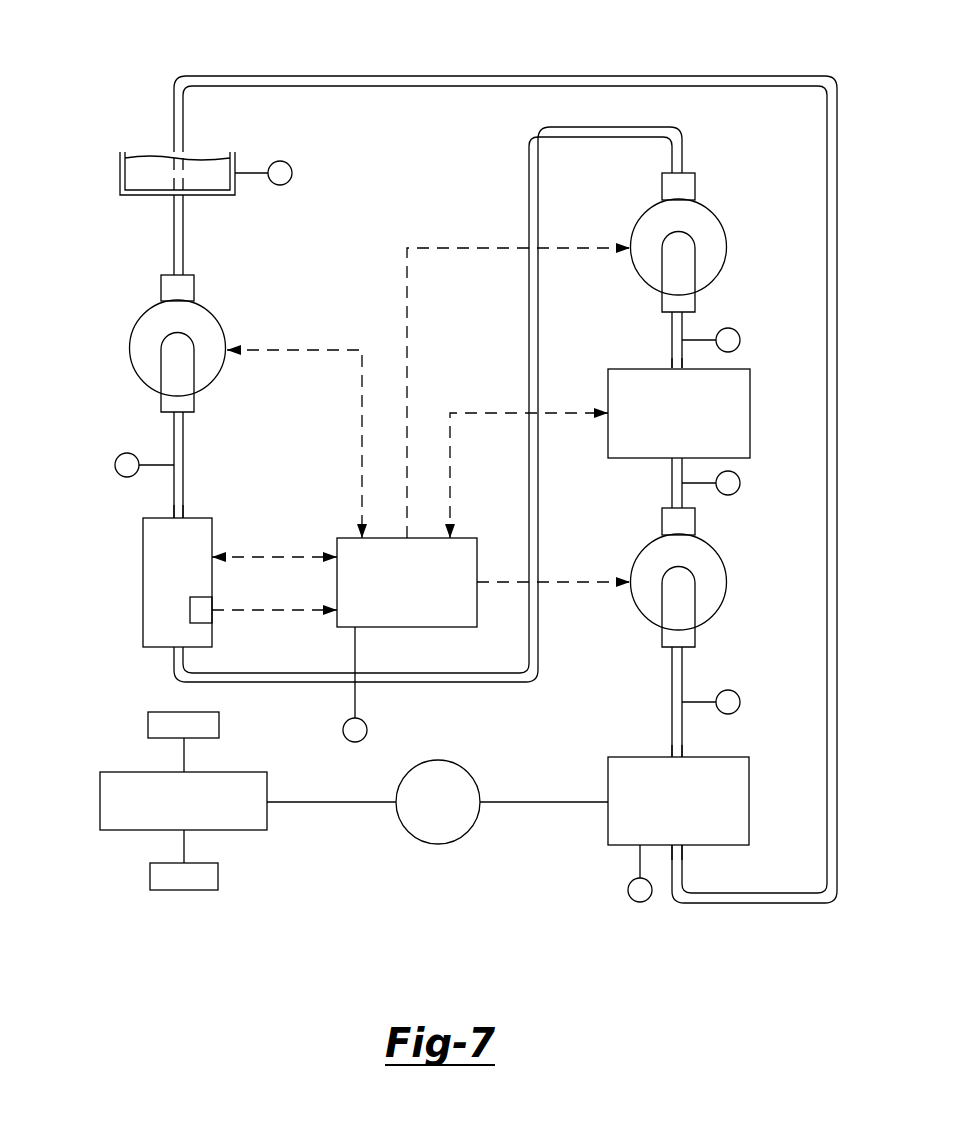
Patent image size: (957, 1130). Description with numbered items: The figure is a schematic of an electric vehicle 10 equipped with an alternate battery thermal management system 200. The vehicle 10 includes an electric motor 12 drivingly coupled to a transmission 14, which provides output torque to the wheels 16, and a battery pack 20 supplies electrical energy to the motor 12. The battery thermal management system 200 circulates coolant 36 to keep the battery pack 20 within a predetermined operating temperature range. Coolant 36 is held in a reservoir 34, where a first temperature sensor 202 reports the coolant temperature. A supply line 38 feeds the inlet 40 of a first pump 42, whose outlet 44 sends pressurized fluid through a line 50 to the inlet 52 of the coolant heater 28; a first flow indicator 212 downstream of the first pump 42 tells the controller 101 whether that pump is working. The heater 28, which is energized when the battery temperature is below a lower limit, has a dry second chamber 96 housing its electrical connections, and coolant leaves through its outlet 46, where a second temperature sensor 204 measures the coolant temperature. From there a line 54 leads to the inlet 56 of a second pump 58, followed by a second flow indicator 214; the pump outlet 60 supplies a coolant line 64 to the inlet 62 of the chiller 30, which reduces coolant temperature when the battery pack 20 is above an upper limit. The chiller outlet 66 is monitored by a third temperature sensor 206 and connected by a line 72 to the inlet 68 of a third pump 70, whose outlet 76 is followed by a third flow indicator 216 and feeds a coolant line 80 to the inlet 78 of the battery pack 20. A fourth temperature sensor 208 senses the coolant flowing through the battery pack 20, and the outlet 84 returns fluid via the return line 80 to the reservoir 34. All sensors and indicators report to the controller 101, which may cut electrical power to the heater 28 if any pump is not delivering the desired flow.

The battery thermal management system 200 is at (214, 60).
The electric vehicle 10 is at (362, 915).
The reservoir 34 is at (132, 170).
The coolant 36 is at (148, 162).
The supply line 38 is at (177, 213).
The first temperature sensor 202 is at (292, 173).
The inlet 40 is at (183, 273).
The first pump 42 is at (143, 313).
The outlet 44 is at (172, 415).
The line 50 is at (178, 440).
The first flow indicator 212 is at (115, 465).
The inlet 52 is at (178, 518).
The coolant heater 28 is at (143, 558).
The second chamber 96 is at (203, 617).
The outlet 46 is at (172, 648).
The line 54 is at (529, 195).
The controller 101 is at (360, 628).
The second temperature sensor 204 is at (355, 742).
The wheels 16 is at (219, 718).
The transmission 14 is at (253, 772).
The electric motor 12 is at (438, 760).
The inlet 56 is at (682, 172).
The second pump 58 is at (720, 215).
The outlet 60 is at (677, 312).
The coolant line 64 is at (683, 327).
The second flow indicator 214 is at (740, 340).
The inlet 62 is at (672, 368).
The chiller 30 is at (750, 400).
The outlet 66 is at (675, 460).
The third temperature sensor 206 is at (740, 483).
The inlet 68 is at (672, 508).
The line 72 is at (682, 493).
The third pump 70 is at (720, 558).
The outlet 76 is at (682, 650).
The third flow indicator 216 is at (740, 702).
The coolant line 80 is at (682, 727).
The inlet 78 is at (672, 757).
The battery pack 20 is at (615, 847).
The outlet 84 is at (675, 850).
The fourth temperature sensor 208 is at (640, 902).